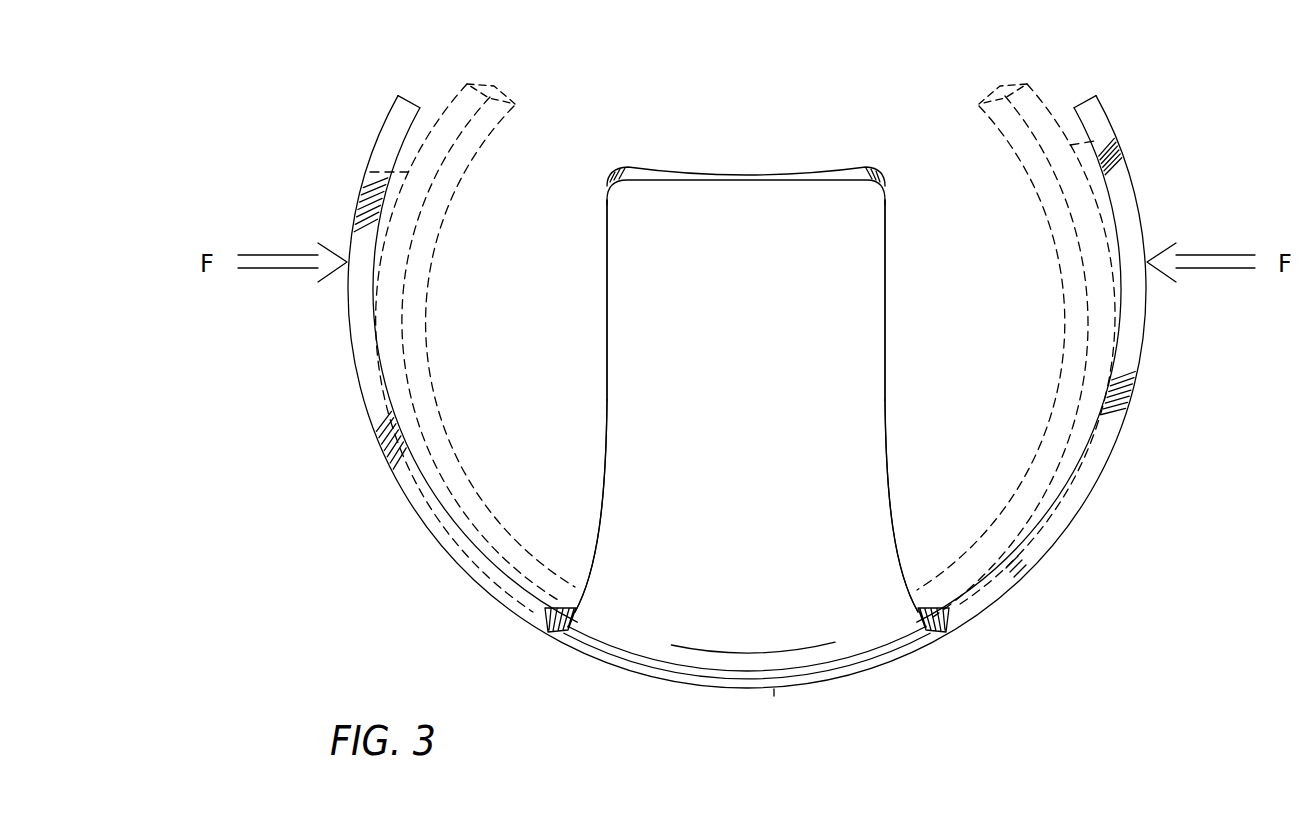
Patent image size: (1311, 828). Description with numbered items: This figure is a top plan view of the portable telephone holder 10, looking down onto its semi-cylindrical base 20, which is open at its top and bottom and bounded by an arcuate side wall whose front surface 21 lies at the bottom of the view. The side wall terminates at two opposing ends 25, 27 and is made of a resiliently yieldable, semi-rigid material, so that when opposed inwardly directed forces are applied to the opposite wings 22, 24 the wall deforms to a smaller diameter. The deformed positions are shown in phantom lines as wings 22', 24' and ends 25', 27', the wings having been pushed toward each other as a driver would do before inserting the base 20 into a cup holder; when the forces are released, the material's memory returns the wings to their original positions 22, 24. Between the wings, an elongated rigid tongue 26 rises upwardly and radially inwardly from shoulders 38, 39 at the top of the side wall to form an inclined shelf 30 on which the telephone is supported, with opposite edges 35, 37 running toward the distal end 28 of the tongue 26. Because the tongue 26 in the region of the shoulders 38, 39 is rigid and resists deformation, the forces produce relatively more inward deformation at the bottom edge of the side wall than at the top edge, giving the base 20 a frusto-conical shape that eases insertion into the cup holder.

The portable telephone holder 10 is at (340, 83).
The base 20 is at (910, 662).
The front surface 21 is at (774, 696).
The wing 22 is at (338, 205).
The deformed wing position 22' is at (354, 155).
The wing 24 is at (1156, 156).
The deformed wing position 24' is at (1121, 115).
The end of side wall 25 is at (462, 328).
The deformed end position 25' is at (454, 317).
The tongue 26 is at (903, 441).
The end of side wall 27 is at (1019, 319).
The deformed end position 27' is at (1010, 320).
The distal end 28 is at (666, 177).
The shelf 30 is at (761, 354).
The edge of shelf 35 is at (606, 283).
The edge of shelf 37 is at (887, 267).
The shoulder 38 is at (587, 582).
The shoulder 39 is at (913, 600).